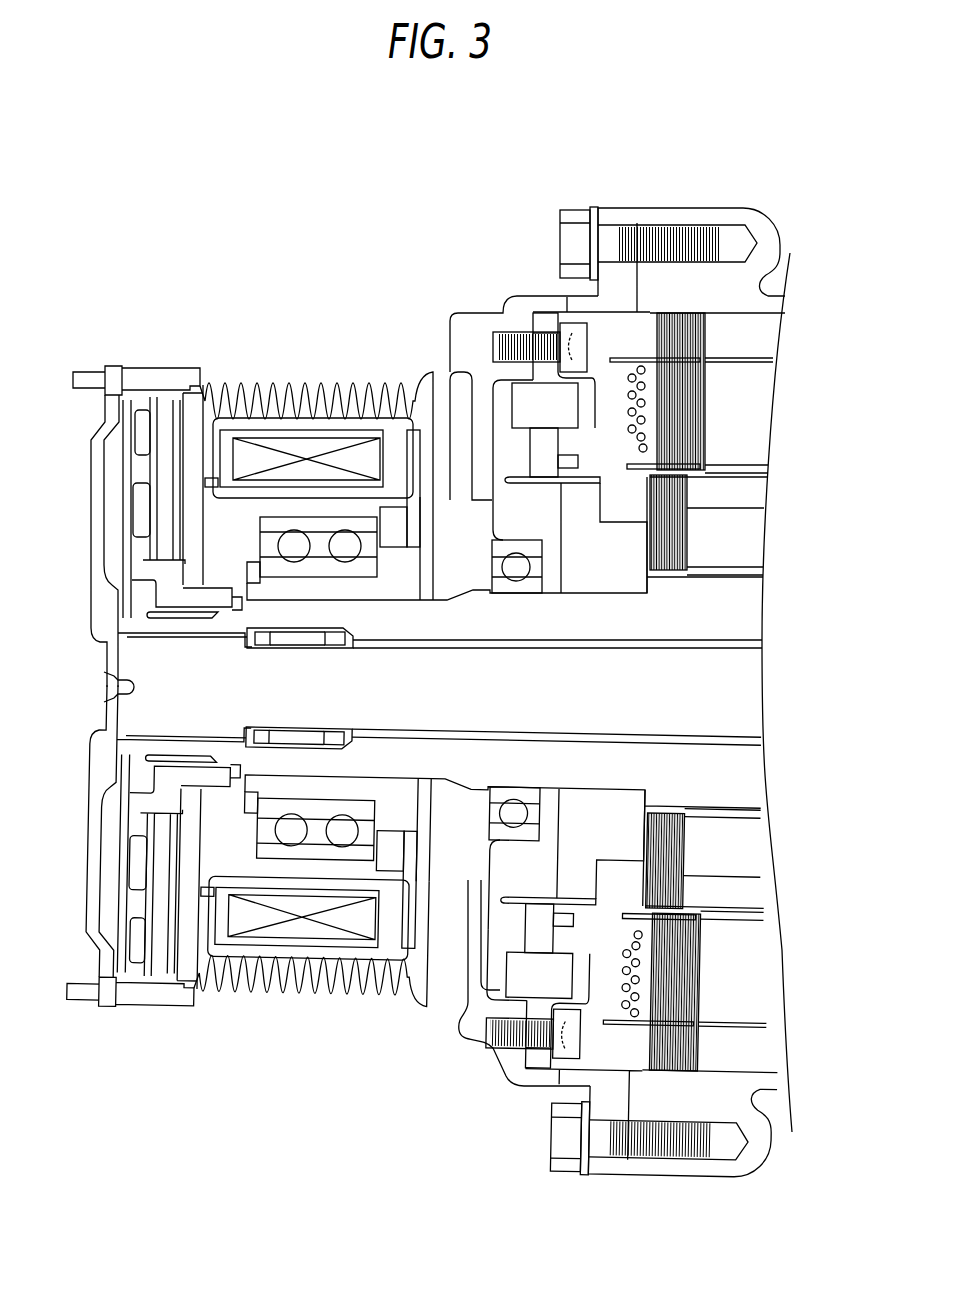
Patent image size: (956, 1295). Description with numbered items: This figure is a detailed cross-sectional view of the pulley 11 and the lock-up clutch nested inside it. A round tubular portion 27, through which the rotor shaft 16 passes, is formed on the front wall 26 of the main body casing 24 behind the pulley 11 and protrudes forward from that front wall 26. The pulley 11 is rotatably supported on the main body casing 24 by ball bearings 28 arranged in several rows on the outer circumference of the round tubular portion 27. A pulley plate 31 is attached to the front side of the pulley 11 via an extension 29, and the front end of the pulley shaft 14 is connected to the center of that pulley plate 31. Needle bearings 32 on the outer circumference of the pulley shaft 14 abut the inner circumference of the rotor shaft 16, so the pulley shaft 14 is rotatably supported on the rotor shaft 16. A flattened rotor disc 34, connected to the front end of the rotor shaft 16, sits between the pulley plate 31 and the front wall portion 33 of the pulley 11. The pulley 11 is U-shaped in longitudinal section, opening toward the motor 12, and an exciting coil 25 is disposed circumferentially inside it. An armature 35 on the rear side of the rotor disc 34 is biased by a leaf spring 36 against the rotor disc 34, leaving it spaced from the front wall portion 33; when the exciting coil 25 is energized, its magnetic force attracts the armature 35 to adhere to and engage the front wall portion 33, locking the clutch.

The pulley 11 is at (262, 355).
The motor 12 is at (622, 195).
The pulley shaft 14 is at (750, 706).
The rotor shaft 16 is at (740, 612).
The main body casing 24 is at (455, 305).
The exciting coil 25 is at (315, 445).
The front wall 26 is at (482, 400).
The round tubular portion 27 is at (415, 594).
The ball bearings 28 is at (352, 572).
The extension 29 is at (133, 378).
The pulley plate 31 is at (90, 505).
The needle bearings 32 is at (300, 645).
The front wall portion 33 is at (192, 430).
The rotor disc 34 is at (135, 555).
The armature 35 is at (165, 470).
The leaf spring 36 is at (142, 485).